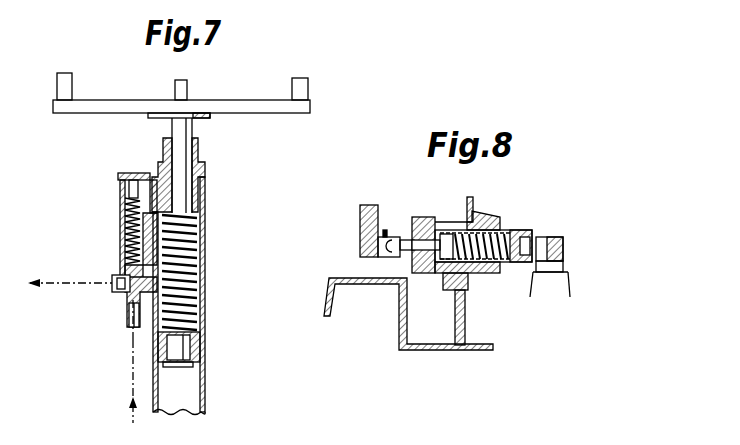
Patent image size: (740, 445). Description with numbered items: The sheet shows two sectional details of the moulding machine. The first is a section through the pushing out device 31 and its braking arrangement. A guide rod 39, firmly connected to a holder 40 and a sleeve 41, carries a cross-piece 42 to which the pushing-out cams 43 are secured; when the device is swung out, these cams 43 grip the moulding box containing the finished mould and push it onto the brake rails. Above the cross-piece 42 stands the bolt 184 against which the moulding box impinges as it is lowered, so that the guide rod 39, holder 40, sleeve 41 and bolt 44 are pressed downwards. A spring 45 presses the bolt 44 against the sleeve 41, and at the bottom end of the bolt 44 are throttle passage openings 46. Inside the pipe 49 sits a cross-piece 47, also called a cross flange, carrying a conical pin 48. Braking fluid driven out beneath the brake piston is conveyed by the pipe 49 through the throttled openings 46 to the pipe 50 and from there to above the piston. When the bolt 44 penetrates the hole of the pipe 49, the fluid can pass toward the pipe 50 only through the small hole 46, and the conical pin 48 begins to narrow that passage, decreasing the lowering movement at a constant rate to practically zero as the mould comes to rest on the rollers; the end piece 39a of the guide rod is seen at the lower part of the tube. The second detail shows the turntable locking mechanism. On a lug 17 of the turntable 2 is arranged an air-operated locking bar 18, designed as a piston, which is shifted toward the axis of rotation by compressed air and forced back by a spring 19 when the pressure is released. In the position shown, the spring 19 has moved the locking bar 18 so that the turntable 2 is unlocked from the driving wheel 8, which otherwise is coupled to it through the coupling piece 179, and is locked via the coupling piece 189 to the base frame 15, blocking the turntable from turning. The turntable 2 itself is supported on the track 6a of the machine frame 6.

In FIG. 7, the cross-piece 42 is at (108, 98).
In FIG. 7, the bolt 184 is at (190, 87).
In FIG. 7, the pushing-out cams 43 is at (290, 87).
In FIG. 7, the guide rod 39 is at (195, 126).
In FIG. 7, the holder 40 is at (203, 195).
In FIG. 7, the sleeve 41 is at (125, 171).
In FIG. 7, the bolt 44 is at (117, 178).
In FIG. 7, the spring 45 is at (130, 228).
In FIG. 7, the throttle passage openings 46 is at (122, 294).
In FIG. 7, the cross-piece 47 is at (132, 333).
In FIG. 7, the pin 48 is at (128, 296).
In FIG. 7, the pipe 49 is at (130, 376).
In FIG. 7, the pipe 50 is at (73, 284).
In FIG. 7, the pushing out device 31 is at (206, 282).
In FIG. 7, the shaft end piece 39a is at (202, 351).
In FIG. 8, the base frame 15 is at (356, 240).
In FIG. 8, the coupling piece 189 is at (387, 232).
In FIG. 8, the locking bar 18 is at (447, 244).
In FIG. 8, the turntable 2 is at (472, 204).
In FIG. 8, the lug 17 is at (493, 216).
In FIG. 8, the coupling piece 179 is at (549, 235).
In FIG. 8, the driving wheel 8 is at (571, 274).
In FIG. 8, the spring 19 is at (506, 260).
In FIG. 8, the track 6a is at (472, 286).
In FIG. 8, the machine frame 6 is at (397, 326).